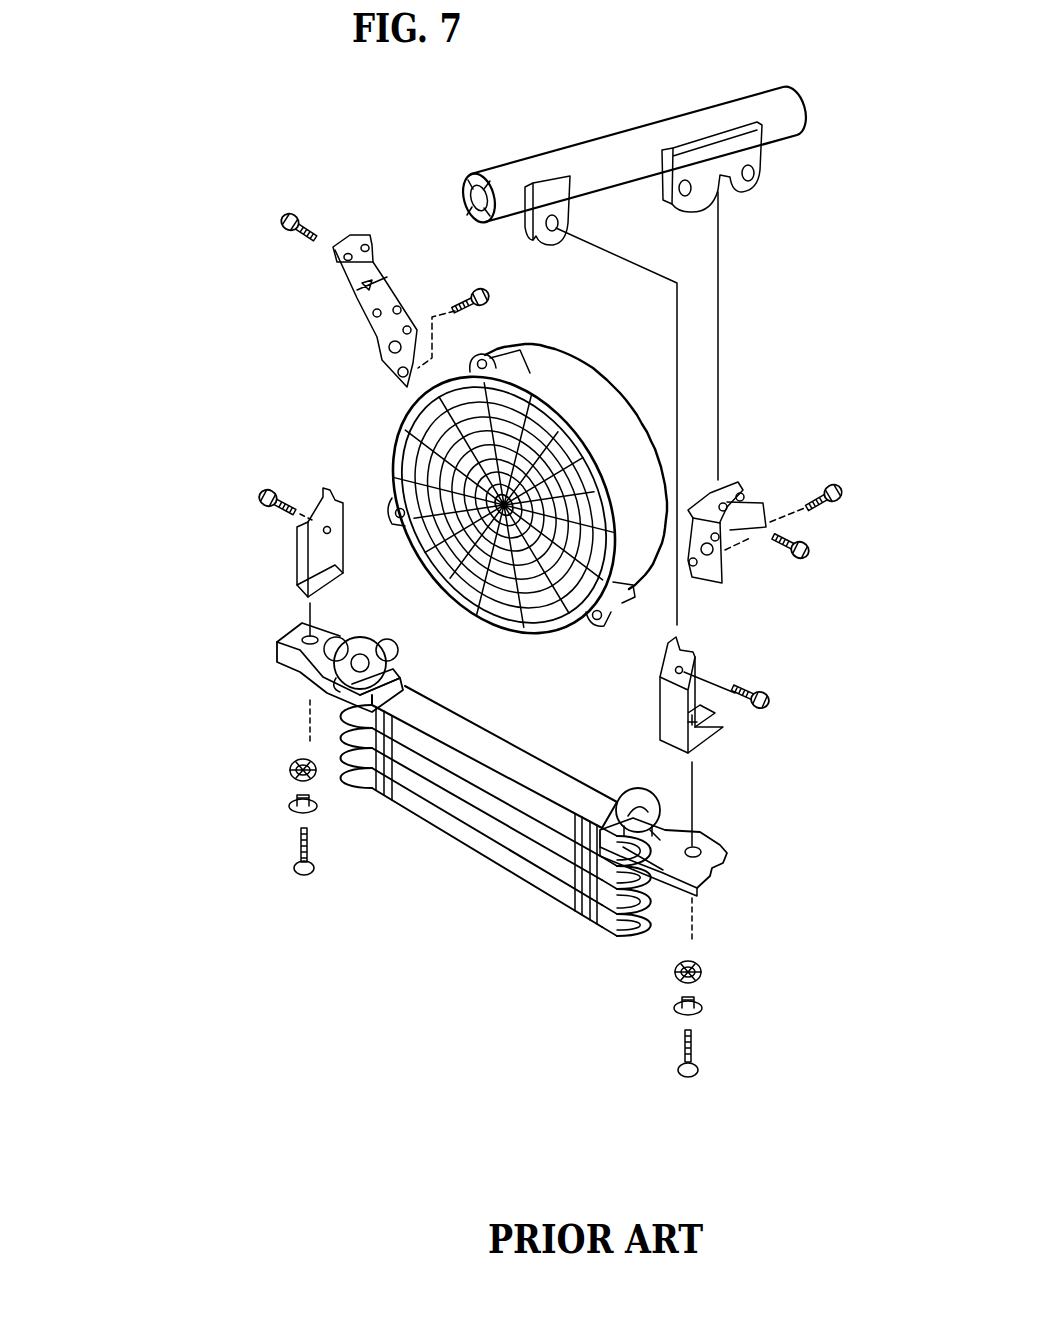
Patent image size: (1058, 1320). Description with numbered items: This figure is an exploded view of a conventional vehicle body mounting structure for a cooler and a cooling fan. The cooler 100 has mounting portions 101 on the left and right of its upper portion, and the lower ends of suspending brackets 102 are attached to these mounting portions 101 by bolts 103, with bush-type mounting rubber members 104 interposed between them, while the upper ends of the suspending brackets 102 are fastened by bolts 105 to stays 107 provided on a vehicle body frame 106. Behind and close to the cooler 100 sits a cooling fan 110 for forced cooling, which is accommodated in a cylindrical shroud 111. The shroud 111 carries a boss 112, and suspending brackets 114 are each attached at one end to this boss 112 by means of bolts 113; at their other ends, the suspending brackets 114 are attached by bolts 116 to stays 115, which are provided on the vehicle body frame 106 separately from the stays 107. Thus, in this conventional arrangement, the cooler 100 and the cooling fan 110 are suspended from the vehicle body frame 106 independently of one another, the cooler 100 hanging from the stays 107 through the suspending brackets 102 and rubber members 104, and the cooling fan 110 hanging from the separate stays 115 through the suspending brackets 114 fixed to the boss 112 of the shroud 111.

The cooler 100 is at (475, 872).
The mounting portions 101 is at (288, 640).
The suspending brackets 102 is at (302, 556).
The bolts 103 is at (300, 868).
The mounting rubber members 104 is at (290, 770).
The bolts 105 is at (280, 490).
The vehicle body frame 106 is at (628, 138).
The stays 107 is at (552, 240).
The cooling fan 110 is at (540, 377).
The shroud 111 is at (626, 438).
The boss 112 is at (394, 508).
The bolts 113 is at (447, 293).
The suspending brackets 114 is at (340, 308).
The stays 115 is at (710, 167).
The bolts 116 is at (292, 208).